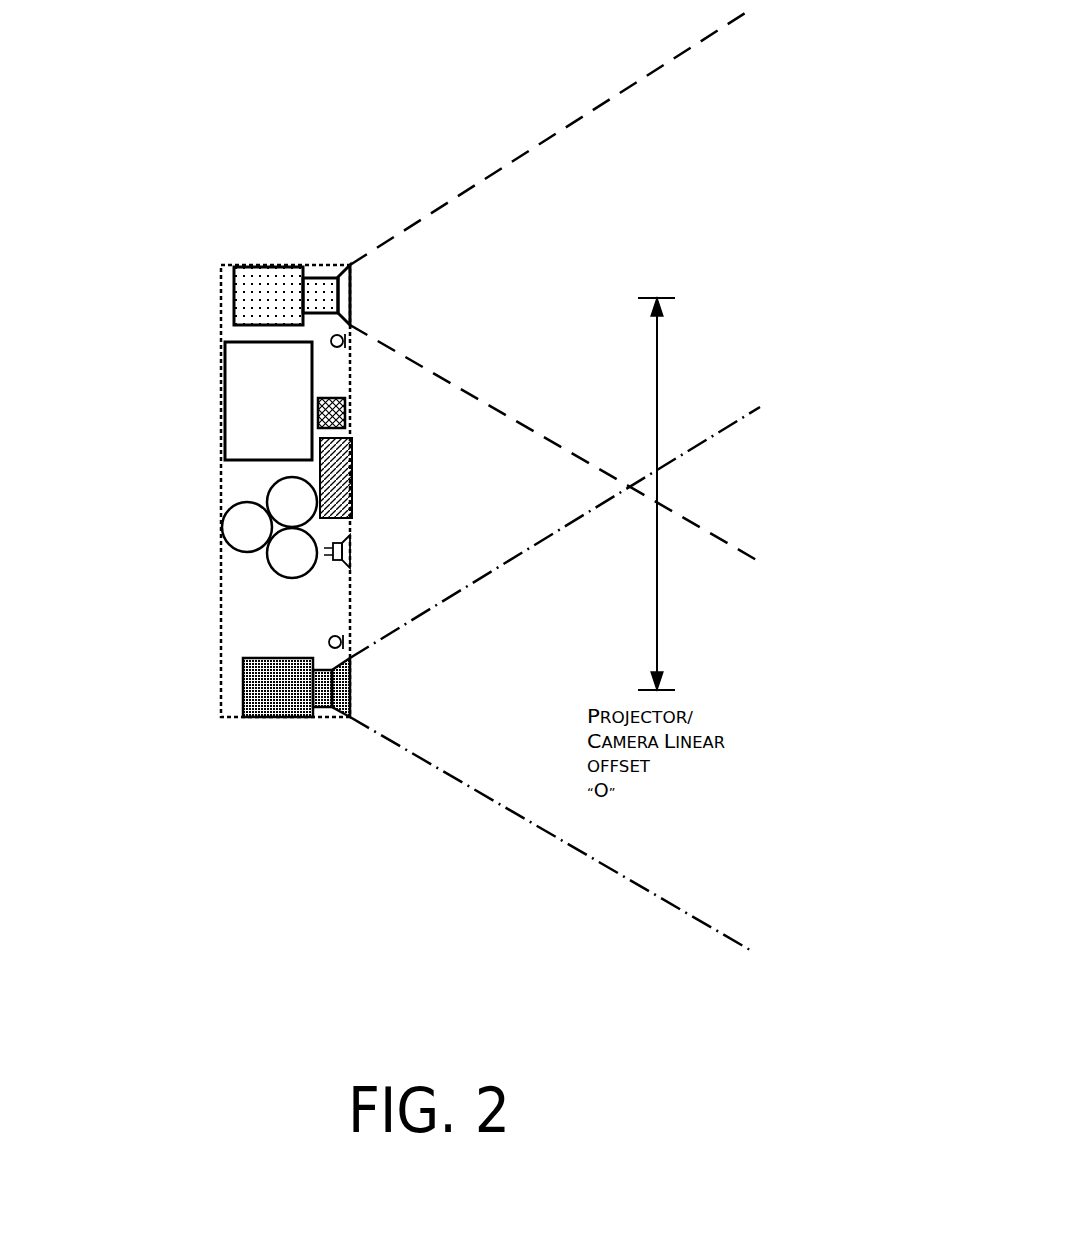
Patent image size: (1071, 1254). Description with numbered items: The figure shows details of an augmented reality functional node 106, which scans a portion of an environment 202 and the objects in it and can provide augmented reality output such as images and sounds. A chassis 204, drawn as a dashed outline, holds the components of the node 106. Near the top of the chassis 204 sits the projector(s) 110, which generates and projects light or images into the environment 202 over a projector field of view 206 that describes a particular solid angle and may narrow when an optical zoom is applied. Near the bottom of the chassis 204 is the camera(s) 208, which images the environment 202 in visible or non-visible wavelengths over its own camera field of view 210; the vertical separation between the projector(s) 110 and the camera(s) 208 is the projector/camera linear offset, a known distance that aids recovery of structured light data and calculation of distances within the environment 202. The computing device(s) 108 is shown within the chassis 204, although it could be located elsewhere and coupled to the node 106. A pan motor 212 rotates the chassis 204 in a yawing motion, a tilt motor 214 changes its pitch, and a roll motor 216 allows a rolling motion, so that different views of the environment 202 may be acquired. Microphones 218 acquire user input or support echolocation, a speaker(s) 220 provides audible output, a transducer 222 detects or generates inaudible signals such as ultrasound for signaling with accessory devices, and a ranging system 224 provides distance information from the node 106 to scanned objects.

The augmented reality functional node 106 is at (232, 266).
The computing device(s) 108 is at (268, 400).
The projector(s) 110 is at (268, 297).
The environment 202 is at (735, 494).
The chassis 204 is at (284, 266).
The projector field of view 206 is at (552, 126).
The camera(s) 208 is at (243, 717).
The camera field of view 210 is at (506, 816).
The pan motor 212 is at (268, 508).
The tilt motor 214 is at (222, 527).
The roll motor 216 is at (268, 550).
The microphone 218 is at (347, 334).
The speaker(s) 220 is at (351, 548).
The transducer 222 is at (351, 399).
The ranging system 224 is at (351, 471).